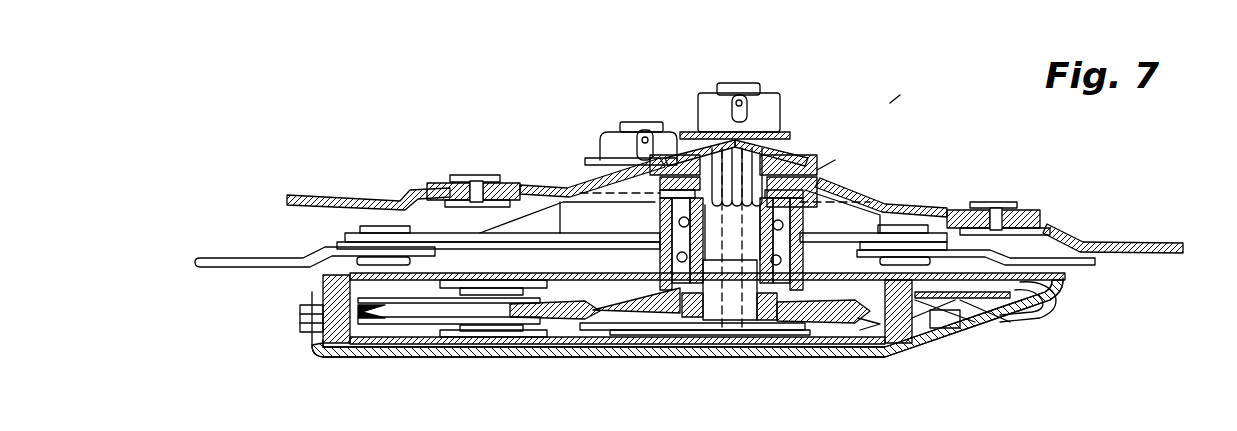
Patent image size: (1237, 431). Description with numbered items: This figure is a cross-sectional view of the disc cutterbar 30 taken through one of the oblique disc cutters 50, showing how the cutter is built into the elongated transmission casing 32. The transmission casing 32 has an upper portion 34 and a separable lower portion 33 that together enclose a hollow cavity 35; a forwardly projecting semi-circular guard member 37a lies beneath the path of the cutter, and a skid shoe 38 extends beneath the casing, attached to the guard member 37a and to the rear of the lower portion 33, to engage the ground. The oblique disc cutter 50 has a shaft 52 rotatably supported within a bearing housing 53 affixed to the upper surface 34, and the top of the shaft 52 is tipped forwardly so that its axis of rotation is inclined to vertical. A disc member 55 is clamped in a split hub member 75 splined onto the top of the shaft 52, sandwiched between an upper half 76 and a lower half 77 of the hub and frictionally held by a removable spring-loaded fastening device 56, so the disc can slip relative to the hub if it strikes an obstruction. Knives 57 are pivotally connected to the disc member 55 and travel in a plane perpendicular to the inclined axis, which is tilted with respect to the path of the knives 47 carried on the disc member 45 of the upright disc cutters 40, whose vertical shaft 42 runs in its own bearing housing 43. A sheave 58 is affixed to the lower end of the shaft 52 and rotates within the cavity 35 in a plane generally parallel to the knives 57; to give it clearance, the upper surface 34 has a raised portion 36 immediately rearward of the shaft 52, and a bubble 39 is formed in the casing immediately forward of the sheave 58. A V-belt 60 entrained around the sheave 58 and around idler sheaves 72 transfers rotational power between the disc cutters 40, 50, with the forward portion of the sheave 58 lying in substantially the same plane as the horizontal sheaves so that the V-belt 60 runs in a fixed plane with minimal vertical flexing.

The disc cutterbar 30 is at (895, 103).
The transmission casing 32 is at (323, 287).
The lower portion 33 is at (810, 330).
The upper portion 34 is at (485, 272).
The hollow cavity 35 is at (410, 289).
The raised portion 36 is at (578, 248).
The guard member 37a is at (1050, 300).
The skid shoe 38 is at (992, 322).
The bubble 39 is at (872, 345).
The upright disc cutter 40 is at (898, 200).
The vertical shaft 42 is at (650, 122).
The bearing housing 43 is at (577, 252).
The disc member 45 is at (427, 232).
The knives 47 is at (217, 267).
The oblique disc cutter 50 is at (842, 162).
The shaft 52 is at (727, 310).
The bearing housing 53 is at (660, 222).
The disc member 55 is at (947, 206).
The spring-loaded fastening device 56 is at (770, 114).
The knives 57 is at (335, 198).
The sheave 58 is at (825, 318).
The V-belt 60 is at (373, 323).
The idler sheave 72 is at (395, 320).
The split hub member 75 is at (845, 152).
The upper half 76 is at (812, 160).
The lower half 77 is at (835, 190).